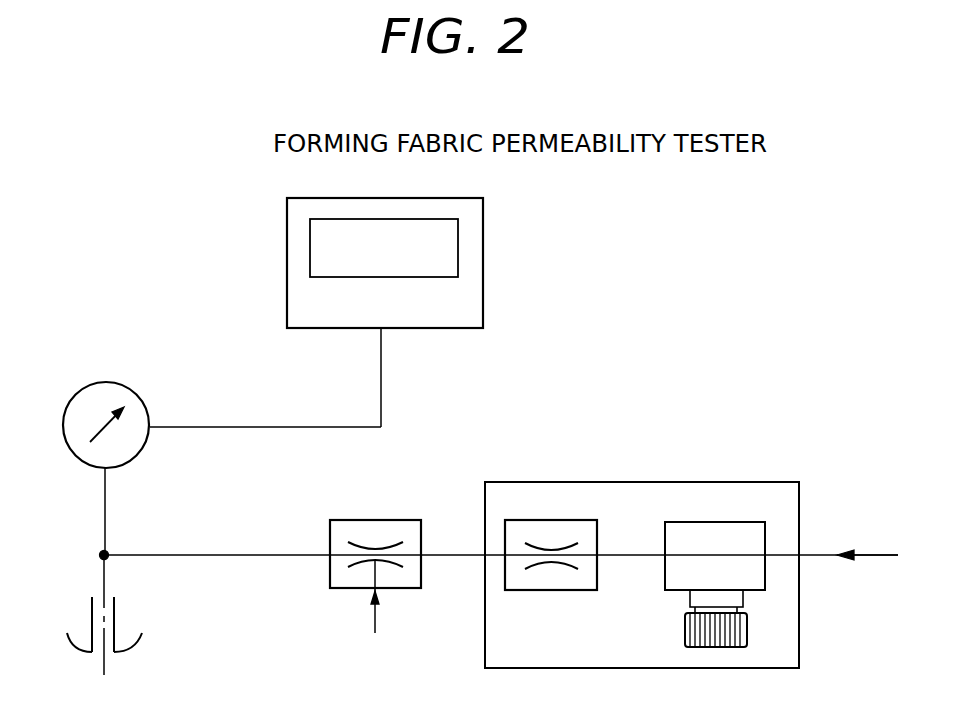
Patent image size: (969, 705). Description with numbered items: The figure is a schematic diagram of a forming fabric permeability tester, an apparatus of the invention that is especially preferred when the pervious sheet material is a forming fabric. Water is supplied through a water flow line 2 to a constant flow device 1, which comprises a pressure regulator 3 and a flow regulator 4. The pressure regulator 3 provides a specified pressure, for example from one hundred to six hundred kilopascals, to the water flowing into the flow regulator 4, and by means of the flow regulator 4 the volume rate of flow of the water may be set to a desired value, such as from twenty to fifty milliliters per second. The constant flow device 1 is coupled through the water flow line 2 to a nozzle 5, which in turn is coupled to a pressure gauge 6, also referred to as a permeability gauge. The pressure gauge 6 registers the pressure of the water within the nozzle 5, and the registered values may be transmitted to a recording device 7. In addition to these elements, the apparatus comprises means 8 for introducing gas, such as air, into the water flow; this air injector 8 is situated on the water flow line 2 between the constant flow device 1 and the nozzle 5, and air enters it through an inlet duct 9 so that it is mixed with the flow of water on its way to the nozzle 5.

The constant flow device 1 is at (799, 632).
The water flow line 2 is at (822, 555).
The pressure regulator 3 is at (745, 522).
The flow regulator 4 is at (582, 520).
The nozzle 5 is at (92, 612).
The pressure gauge 6 is at (141, 397).
The recording device 7 is at (287, 251).
The means for introducing gas 8 is at (409, 520).
The inlet duct 9 is at (377, 615).